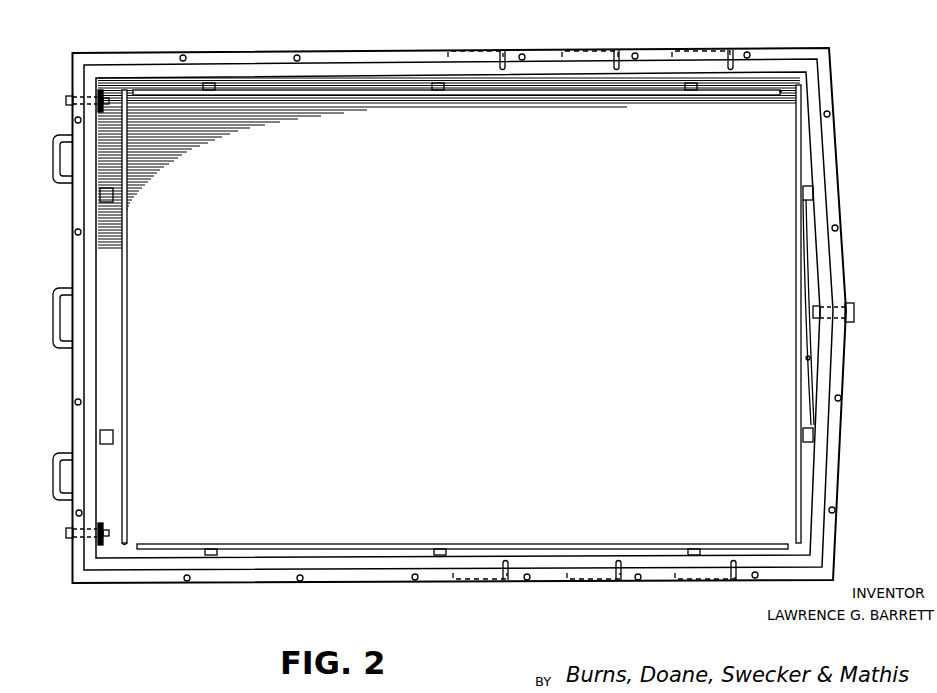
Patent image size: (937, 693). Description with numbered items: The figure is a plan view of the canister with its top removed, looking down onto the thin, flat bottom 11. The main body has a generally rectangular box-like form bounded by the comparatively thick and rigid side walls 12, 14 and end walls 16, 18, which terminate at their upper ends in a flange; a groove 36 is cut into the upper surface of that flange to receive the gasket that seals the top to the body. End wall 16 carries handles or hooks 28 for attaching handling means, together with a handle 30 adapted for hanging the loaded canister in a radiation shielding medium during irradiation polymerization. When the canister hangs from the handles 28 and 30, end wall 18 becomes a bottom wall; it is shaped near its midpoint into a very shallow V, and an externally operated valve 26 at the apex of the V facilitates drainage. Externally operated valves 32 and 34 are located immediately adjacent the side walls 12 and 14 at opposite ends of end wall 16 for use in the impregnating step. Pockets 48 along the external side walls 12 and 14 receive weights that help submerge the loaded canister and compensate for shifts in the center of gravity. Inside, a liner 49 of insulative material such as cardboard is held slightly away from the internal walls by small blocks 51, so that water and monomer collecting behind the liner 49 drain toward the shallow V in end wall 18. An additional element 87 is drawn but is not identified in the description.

The bottom 11 is at (458, 210).
The side wall 12 is at (350, 547).
The side wall 14 is at (574, 92).
The end wall 16 is at (100, 250).
The end wall 18 is at (797, 265).
The externally operated valve 26 is at (854, 304).
The handles or hooks 28 is at (62, 150).
The handle 30 is at (62, 288).
The externally operated valve 32 is at (68, 96).
The externally operated valve 34 is at (68, 538).
The groove 36 is at (165, 52).
The pockets 48 is at (470, 50).
The liner 49 is at (796, 88).
The small blocks 51 is at (690, 90).
The spring strip 87 is at (806, 358).